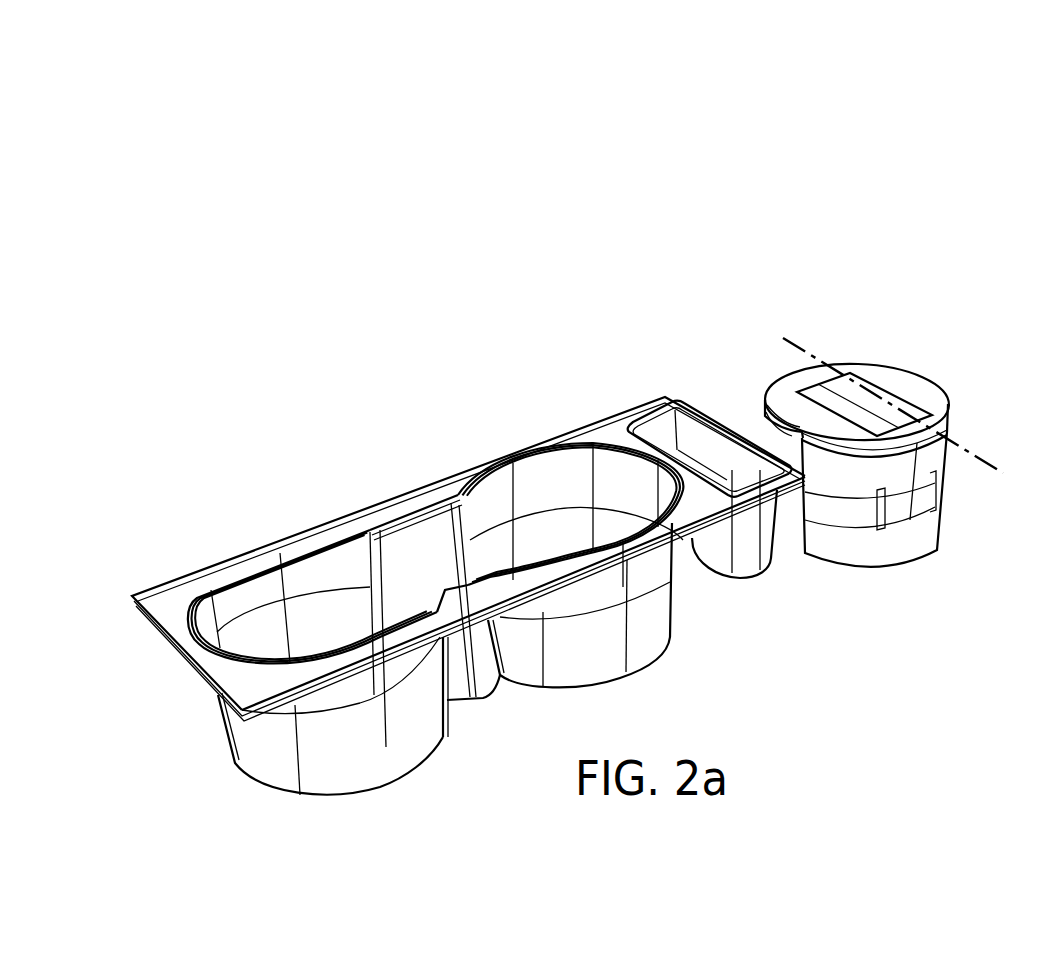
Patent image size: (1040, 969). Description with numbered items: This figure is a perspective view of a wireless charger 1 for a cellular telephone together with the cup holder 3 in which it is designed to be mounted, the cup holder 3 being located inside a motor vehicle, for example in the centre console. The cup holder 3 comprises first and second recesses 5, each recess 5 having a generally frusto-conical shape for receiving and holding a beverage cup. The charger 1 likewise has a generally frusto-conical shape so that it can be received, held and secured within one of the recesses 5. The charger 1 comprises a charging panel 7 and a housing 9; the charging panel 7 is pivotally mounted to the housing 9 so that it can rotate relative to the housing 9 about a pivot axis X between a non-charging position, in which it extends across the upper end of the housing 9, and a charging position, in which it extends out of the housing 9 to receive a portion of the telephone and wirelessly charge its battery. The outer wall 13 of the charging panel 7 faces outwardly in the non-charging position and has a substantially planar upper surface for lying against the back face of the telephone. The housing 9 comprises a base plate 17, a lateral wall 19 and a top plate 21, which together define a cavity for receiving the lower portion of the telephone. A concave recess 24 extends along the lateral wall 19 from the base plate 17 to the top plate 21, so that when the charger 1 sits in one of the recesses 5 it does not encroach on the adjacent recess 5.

The charger 1 is at (985, 154).
The cup holder 3 is at (404, 394).
The recesses 5 is at (548, 502).
The charging panel 7 is at (884, 385).
The housing 9 is at (906, 589).
The outer wall 13 is at (913, 398).
The base plate 17 is at (870, 553).
The lateral wall 19 is at (910, 490).
The top plate 21 is at (927, 448).
The concave recess 24 is at (780, 435).